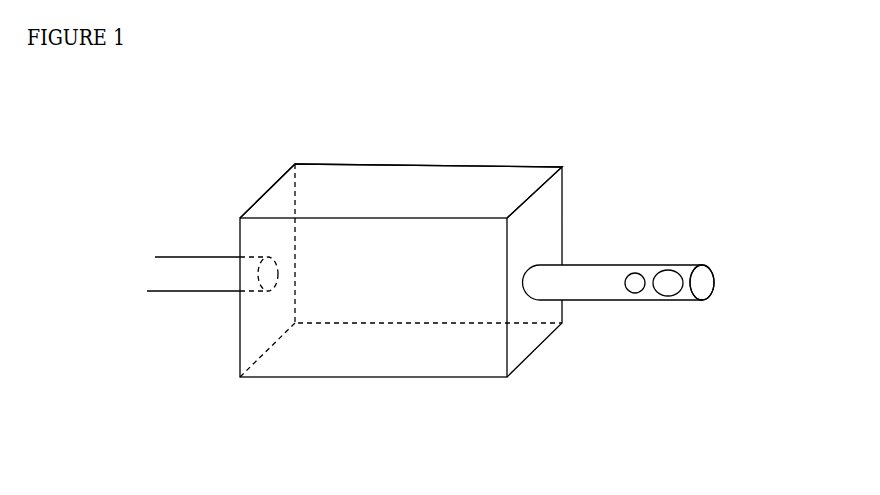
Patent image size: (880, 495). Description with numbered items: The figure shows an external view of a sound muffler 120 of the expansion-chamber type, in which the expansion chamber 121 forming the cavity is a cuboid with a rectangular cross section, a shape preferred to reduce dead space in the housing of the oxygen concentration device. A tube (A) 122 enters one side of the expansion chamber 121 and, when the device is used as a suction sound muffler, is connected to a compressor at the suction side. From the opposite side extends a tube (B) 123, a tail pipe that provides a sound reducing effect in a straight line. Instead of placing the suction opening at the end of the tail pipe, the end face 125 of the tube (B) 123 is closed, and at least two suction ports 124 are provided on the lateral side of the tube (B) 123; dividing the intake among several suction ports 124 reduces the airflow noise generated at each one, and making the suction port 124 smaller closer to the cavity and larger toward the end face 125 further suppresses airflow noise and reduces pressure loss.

The sound muffler 120 is at (573, 130).
The expansion chamber 121 is at (357, 182).
The tube (A) 122 is at (198, 287).
The tube (B) 123 is at (588, 270).
The suction port 124 is at (677, 308).
The end face 125 is at (702, 290).